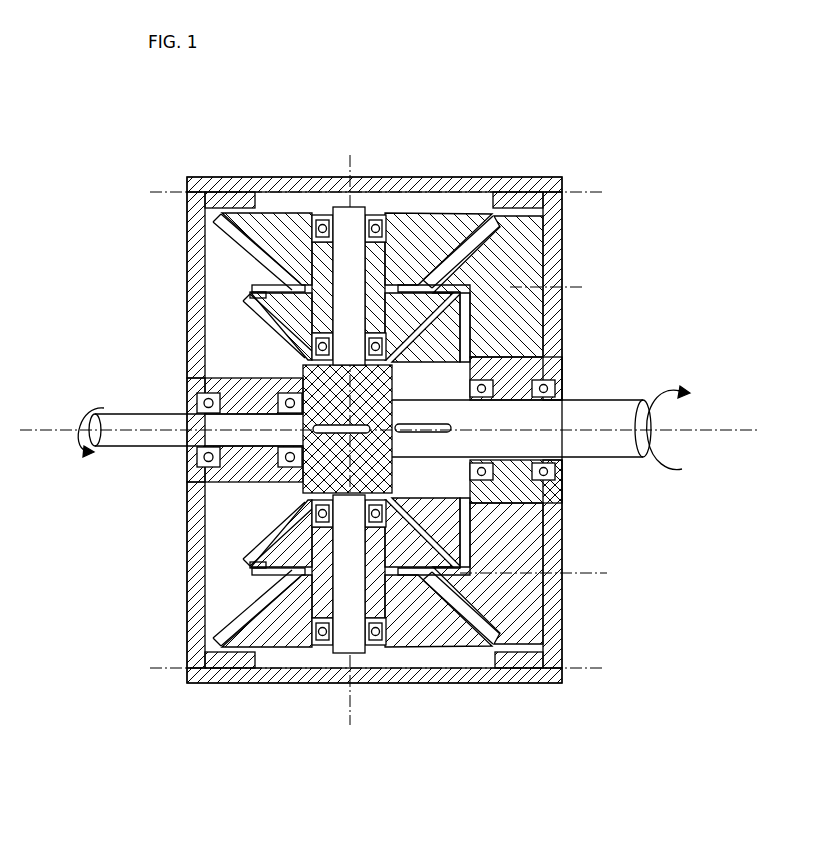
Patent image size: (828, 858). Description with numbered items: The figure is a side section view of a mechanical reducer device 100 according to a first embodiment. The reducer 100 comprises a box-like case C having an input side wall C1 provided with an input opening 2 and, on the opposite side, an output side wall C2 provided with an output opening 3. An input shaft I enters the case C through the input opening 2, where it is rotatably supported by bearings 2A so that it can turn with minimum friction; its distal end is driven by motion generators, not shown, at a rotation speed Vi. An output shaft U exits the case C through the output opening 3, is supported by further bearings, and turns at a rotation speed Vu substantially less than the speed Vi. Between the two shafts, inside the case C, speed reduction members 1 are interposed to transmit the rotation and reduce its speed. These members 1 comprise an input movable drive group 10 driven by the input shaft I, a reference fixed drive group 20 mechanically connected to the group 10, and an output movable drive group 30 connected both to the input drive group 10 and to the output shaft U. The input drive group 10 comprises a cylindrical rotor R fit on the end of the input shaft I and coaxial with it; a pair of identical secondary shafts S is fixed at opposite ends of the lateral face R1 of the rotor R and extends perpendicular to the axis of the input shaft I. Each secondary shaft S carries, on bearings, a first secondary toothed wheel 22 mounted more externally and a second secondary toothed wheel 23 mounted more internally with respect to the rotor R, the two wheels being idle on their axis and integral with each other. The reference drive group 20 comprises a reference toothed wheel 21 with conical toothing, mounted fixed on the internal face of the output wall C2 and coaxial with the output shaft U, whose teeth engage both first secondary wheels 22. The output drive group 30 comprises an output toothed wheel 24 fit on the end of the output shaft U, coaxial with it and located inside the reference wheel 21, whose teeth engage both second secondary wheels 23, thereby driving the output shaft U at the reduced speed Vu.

The mechanical reducer device 100 is at (305, 136).
The speed reduction members 1 is at (222, 570).
The input opening 2 is at (200, 400).
The bearings 2A is at (195, 462).
The output opening 3 is at (562, 398).
The input movable drive group 10 is at (232, 326).
The reference fixed drive group 20 is at (528, 259).
The reference toothed wheel 21 is at (543, 236).
The first secondary toothed wheel 22 is at (405, 245).
The second secondary toothed wheel 23 is at (260, 292).
The output toothed wheel 24 is at (452, 350).
The output movable drive group 30 is at (448, 359).
The lateral face of the rotor R1 is at (320, 355).
The secondary shafts S is at (345, 225).
The input shaft I is at (160, 425).
The output shaft U is at (583, 440).
The rotor R is at (303, 483).
The case C is at (193, 635).
The input side wall C1 is at (188, 272).
The output side wall C2 is at (565, 192).
The rotation speed of the input shaft Vi is at (83, 430).
The rotation speed of the output shaft Vu is at (683, 424).